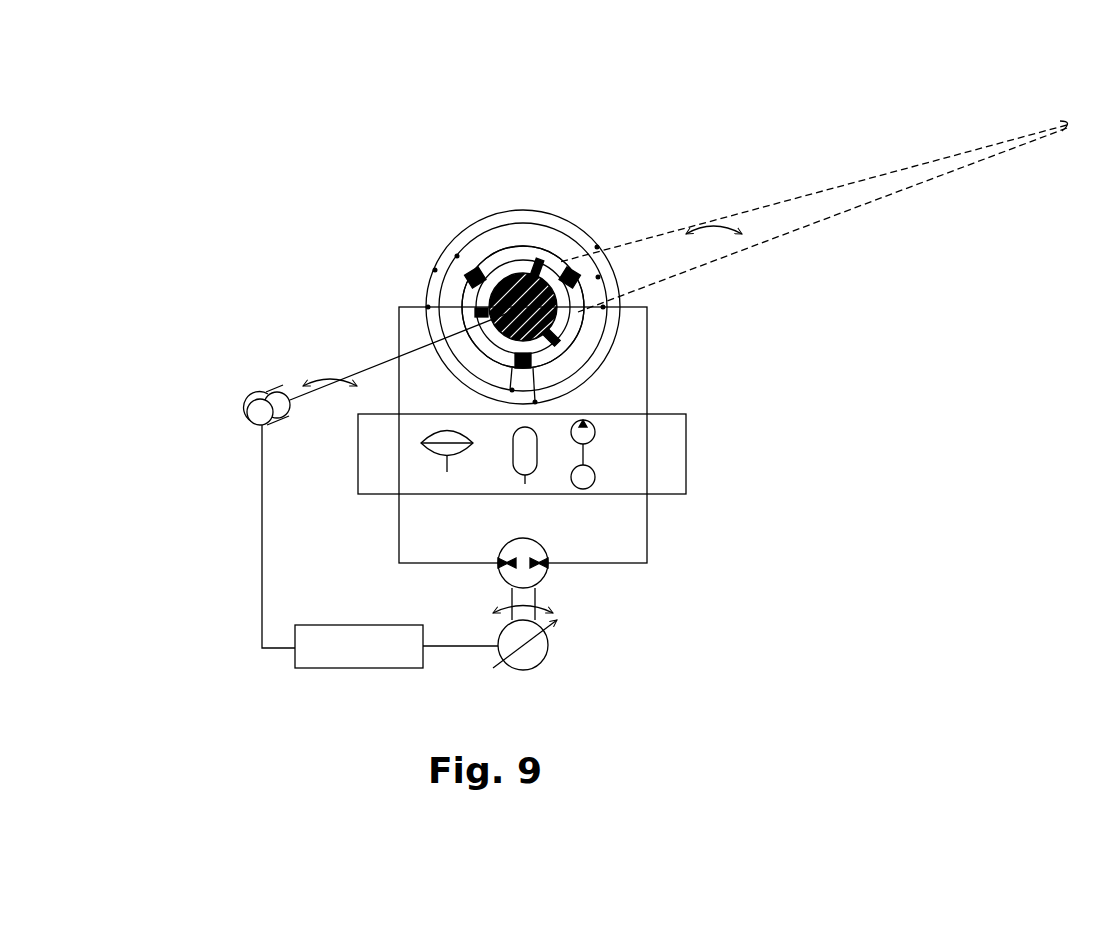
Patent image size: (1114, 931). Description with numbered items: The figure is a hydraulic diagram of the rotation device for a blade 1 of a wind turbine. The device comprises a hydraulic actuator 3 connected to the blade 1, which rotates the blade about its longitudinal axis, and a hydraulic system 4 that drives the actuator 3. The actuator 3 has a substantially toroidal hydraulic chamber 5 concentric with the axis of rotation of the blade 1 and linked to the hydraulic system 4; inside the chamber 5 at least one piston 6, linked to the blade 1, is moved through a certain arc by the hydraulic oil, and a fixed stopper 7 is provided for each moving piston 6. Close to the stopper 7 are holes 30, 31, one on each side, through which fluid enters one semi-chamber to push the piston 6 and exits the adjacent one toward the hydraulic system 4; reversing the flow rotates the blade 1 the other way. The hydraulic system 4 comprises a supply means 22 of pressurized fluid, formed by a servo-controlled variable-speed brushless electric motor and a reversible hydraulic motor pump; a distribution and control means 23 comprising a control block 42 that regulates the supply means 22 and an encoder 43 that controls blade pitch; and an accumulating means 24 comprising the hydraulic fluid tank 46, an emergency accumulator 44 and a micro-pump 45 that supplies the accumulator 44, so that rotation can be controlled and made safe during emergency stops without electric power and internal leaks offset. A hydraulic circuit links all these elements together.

The blade 1 is at (867, 195).
The hydraulic actuator 3 is at (385, 247).
The hydraulic system 4 is at (813, 452).
The hydraulic chamber 5 is at (508, 250).
The piston 6 is at (541, 256).
The fixed stopper 7 is at (475, 270).
The supply means 22 is at (578, 308).
The distribution and control means 23 is at (208, 570).
The accumulating means 24 is at (552, 522).
The hole 30 is at (566, 270).
The hole 31 is at (536, 282).
The control block 42 is at (313, 652).
The encoder 43 is at (250, 408).
The emergency accumulator 44 is at (513, 463).
The micro-pump 45 is at (590, 434).
The hydraulic fluid tank 46 is at (447, 453).